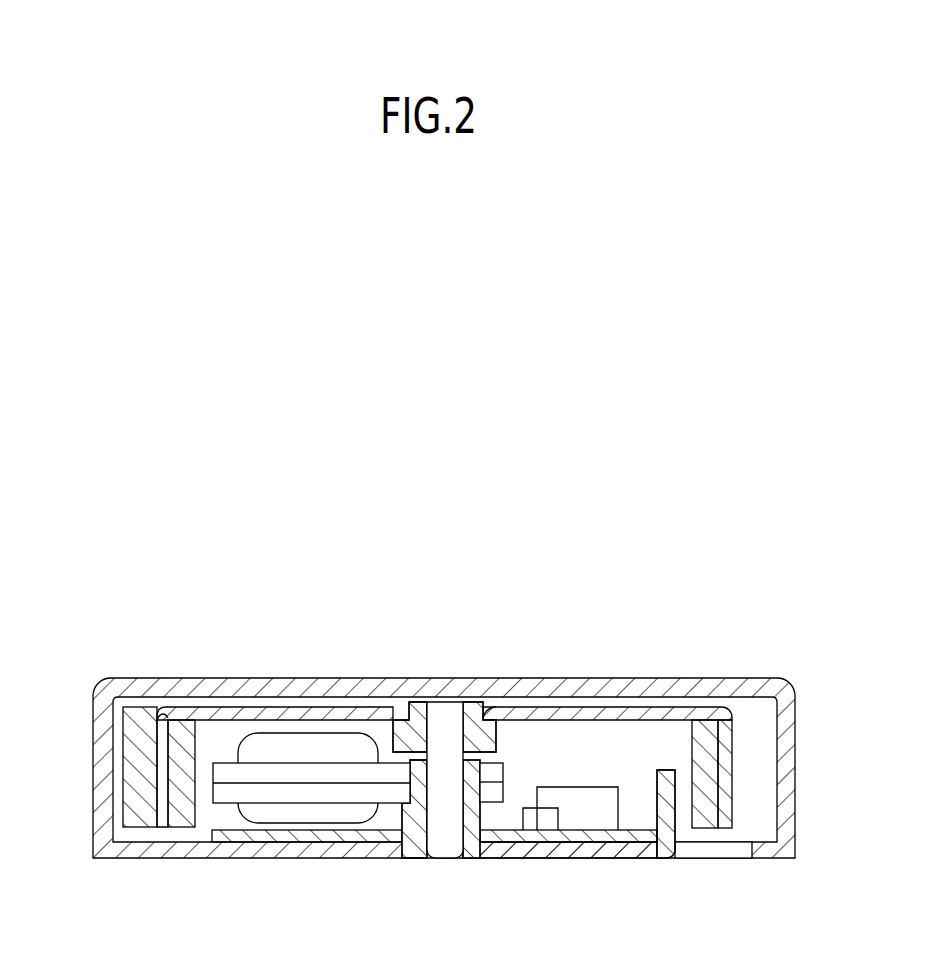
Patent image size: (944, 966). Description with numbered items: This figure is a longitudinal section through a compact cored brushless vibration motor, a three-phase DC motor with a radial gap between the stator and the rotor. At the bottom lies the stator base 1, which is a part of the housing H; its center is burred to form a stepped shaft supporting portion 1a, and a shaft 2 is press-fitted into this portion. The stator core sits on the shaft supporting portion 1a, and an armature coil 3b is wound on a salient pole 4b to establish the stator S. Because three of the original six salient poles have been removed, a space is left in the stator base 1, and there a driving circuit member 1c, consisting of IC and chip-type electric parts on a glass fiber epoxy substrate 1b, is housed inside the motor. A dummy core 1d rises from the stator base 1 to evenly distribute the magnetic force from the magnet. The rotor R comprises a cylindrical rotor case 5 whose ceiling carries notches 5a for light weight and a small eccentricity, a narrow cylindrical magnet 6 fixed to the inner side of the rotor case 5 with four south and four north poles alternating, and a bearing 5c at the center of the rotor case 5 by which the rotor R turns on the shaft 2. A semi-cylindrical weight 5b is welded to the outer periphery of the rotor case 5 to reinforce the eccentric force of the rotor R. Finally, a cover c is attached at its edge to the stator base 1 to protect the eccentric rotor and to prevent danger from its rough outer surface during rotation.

The stator base 1 is at (615, 857).
The shaft supporting portion 1a is at (475, 822).
The glass fiber epoxy substrate 1b is at (558, 840).
The driving circuit member 1c is at (603, 758).
The dummy core 1d is at (676, 776).
The shaft 2 is at (442, 705).
The armature coil 3b is at (323, 813).
The salient pole 4b is at (272, 793).
The rotor case 5 is at (248, 710).
The notch 5a is at (577, 713).
The semi-cylindrical weight 5b is at (148, 710).
The bearing 5c is at (470, 704).
The magnet 6 is at (728, 812).
The cover c is at (788, 717).
The rotor R is at (122, 731).
The stator S is at (224, 804).
The housing H is at (80, 823).